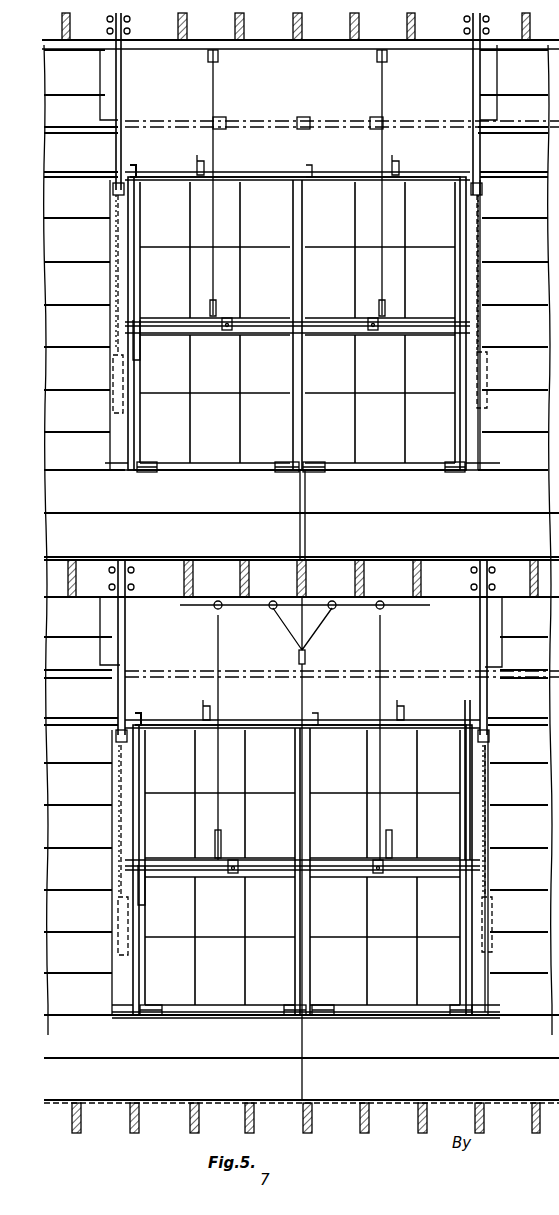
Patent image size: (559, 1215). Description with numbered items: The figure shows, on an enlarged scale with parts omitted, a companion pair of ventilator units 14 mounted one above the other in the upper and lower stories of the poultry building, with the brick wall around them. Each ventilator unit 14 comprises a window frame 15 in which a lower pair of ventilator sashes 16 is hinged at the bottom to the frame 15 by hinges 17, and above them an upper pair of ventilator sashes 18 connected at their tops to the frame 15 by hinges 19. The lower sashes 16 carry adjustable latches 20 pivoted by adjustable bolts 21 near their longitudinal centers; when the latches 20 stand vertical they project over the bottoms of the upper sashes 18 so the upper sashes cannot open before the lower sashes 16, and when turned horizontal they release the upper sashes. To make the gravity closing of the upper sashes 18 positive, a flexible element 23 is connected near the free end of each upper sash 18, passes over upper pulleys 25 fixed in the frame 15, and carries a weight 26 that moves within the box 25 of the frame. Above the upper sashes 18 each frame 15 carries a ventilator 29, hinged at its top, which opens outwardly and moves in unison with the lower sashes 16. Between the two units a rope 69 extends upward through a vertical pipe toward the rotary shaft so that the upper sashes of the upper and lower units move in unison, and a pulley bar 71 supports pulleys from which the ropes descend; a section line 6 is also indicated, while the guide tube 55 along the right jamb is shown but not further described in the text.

The section line 6 is at (300, 18).
The ventilator unit 14 is at (450, 286).
The window frame 15 is at (484, 444).
The lower ventilator sash 16 is at (222, 462).
The hinge 17 is at (143, 472).
The upper ventilator sash 18 is at (242, 320).
The hinge 19 is at (285, 175).
The adjustable latch 20 is at (228, 317).
The adjustable bolt 21 is at (227, 332).
The flexible element 23 is at (115, 336).
The upper pulley 25 is at (113, 188).
The weight 26 is at (133, 165).
The ventilator 29 is at (240, 135).
The guide tube 55 is at (474, 800).
The rope 69 is at (305, 545).
The pulley bar 71 is at (308, 575).